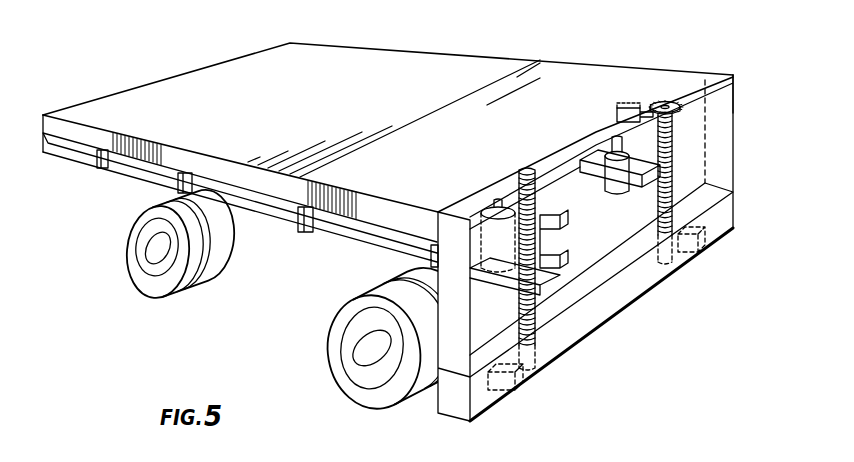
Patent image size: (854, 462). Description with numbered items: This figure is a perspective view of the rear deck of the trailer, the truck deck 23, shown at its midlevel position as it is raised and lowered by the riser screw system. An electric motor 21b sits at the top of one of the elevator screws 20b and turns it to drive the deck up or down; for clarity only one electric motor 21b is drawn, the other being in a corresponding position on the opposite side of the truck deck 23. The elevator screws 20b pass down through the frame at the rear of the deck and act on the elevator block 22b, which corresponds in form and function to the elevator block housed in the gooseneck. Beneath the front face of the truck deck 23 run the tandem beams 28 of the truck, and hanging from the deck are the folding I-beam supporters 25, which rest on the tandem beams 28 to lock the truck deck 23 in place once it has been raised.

The truck deck 23 is at (348, 119).
The tandem beams 28 is at (265, 217).
The folding I-beam supporters 25 is at (306, 240).
The elevator block 22b is at (617, 297).
The elevator screws 20b is at (679, 153).
The electric motors 21b is at (617, 119).